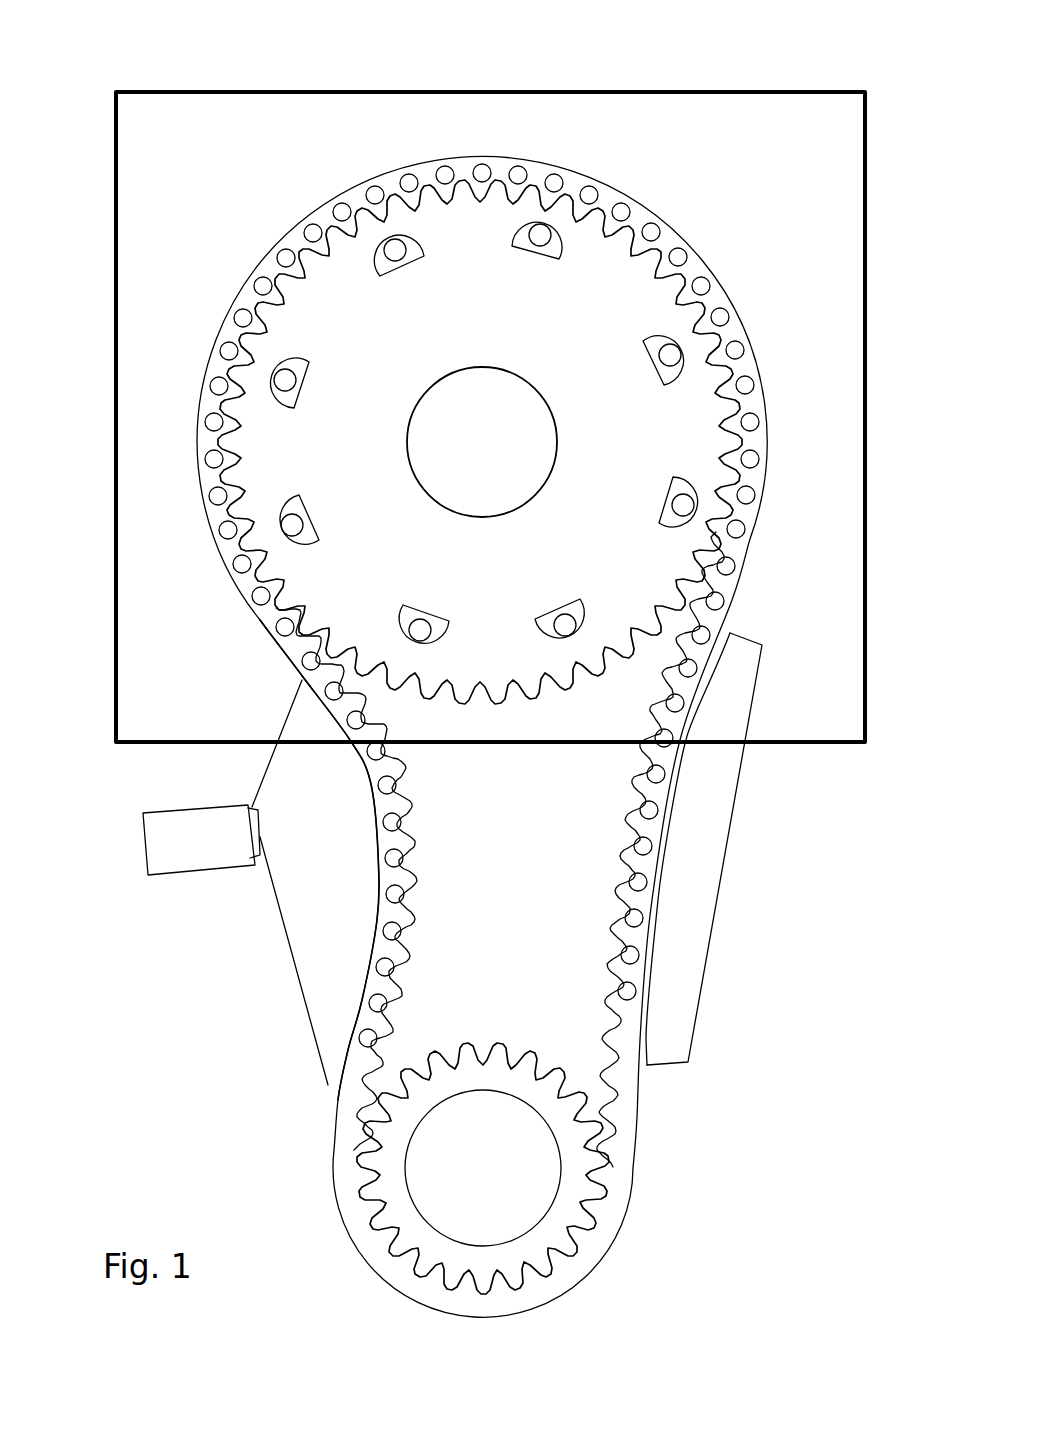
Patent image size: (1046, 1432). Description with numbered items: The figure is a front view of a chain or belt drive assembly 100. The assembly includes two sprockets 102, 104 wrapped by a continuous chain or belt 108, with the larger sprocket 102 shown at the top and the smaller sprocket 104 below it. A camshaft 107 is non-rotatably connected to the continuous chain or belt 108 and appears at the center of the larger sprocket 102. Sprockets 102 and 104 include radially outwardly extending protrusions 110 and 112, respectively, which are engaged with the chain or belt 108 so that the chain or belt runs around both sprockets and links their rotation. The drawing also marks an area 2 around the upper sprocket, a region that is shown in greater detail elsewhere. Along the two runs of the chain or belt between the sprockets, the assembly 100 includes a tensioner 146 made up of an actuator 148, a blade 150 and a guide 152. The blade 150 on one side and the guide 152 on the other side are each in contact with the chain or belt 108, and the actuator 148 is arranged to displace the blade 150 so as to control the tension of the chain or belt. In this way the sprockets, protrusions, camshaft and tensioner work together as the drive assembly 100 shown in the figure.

The chain or belt drive assembly 100 is at (128, 56).
The area 2 is at (783, 743).
The sprocket 102 is at (306, 252).
The sprocket 104 is at (570, 1130).
The camshaft 107 is at (456, 408).
The continuous chain or belt 108 is at (243, 598).
The radially outwardly extending protrusions 110 is at (249, 342).
The radially outwardly extending protrusions 112 is at (600, 1194).
The tensioner 146 is at (118, 848).
The actuator 148 is at (208, 876).
The blade 150 is at (273, 773).
The guide 152 is at (712, 922).